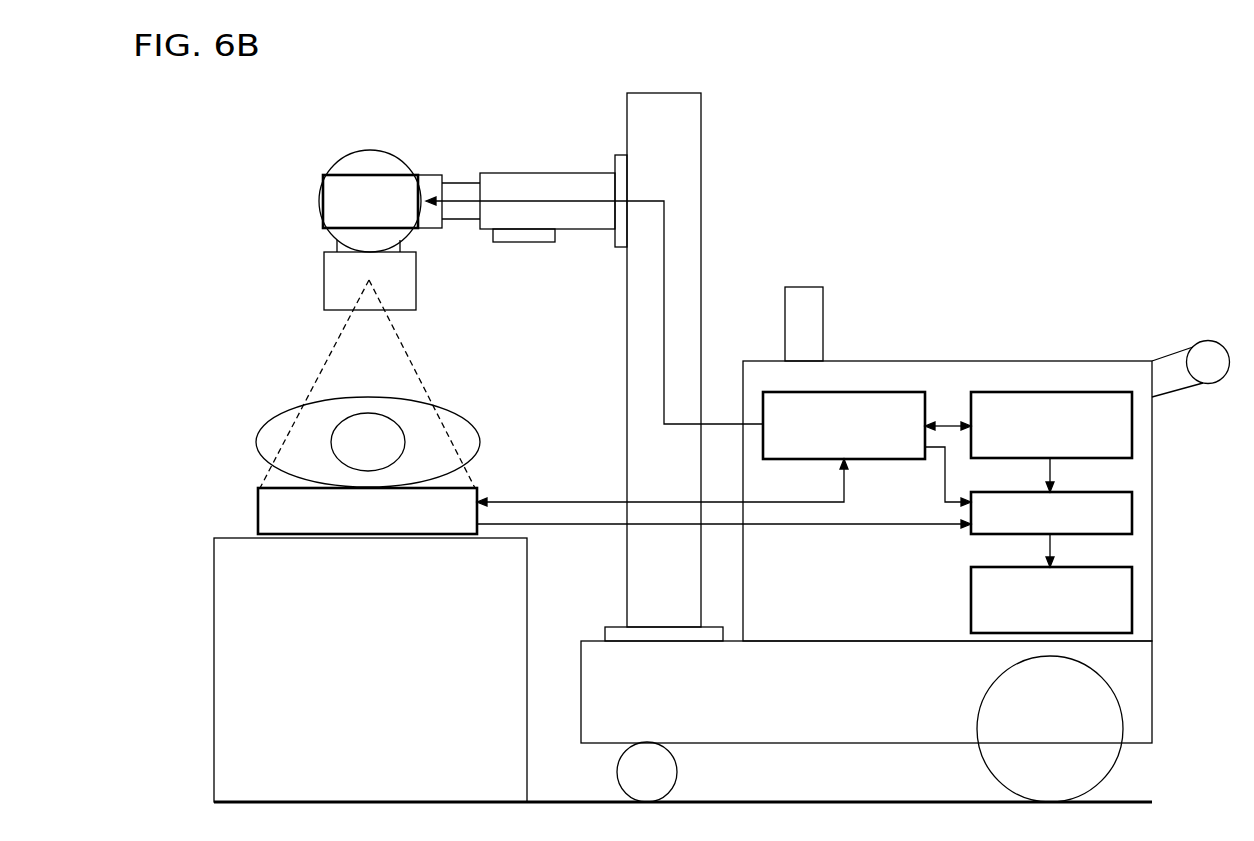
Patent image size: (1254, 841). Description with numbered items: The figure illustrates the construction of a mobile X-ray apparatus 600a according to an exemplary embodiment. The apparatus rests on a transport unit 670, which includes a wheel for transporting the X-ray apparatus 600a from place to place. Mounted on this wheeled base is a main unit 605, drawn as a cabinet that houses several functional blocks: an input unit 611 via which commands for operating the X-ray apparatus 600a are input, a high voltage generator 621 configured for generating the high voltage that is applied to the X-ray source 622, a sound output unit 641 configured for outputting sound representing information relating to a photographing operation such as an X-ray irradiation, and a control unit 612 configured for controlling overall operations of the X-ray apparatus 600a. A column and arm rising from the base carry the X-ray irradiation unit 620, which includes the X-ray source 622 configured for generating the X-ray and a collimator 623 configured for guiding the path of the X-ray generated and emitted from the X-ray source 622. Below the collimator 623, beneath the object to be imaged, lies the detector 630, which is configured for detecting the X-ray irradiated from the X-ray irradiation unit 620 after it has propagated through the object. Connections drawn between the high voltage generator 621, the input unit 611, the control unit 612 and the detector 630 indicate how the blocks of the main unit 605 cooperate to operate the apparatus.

The mobile X-ray apparatus 600a is at (683, 68).
The main unit 605 is at (952, 358).
The input unit 611 is at (1078, 390).
The control unit 612 is at (1078, 489).
The sound output unit 641 is at (1078, 565).
The high voltage generator 621 is at (873, 390).
The X-ray irradiation unit 620 is at (352, 230).
The X-ray source 622 is at (323, 199).
The collimator 623 is at (416, 282).
The detector 630 is at (258, 512).
The transport unit 670 is at (1143, 690).